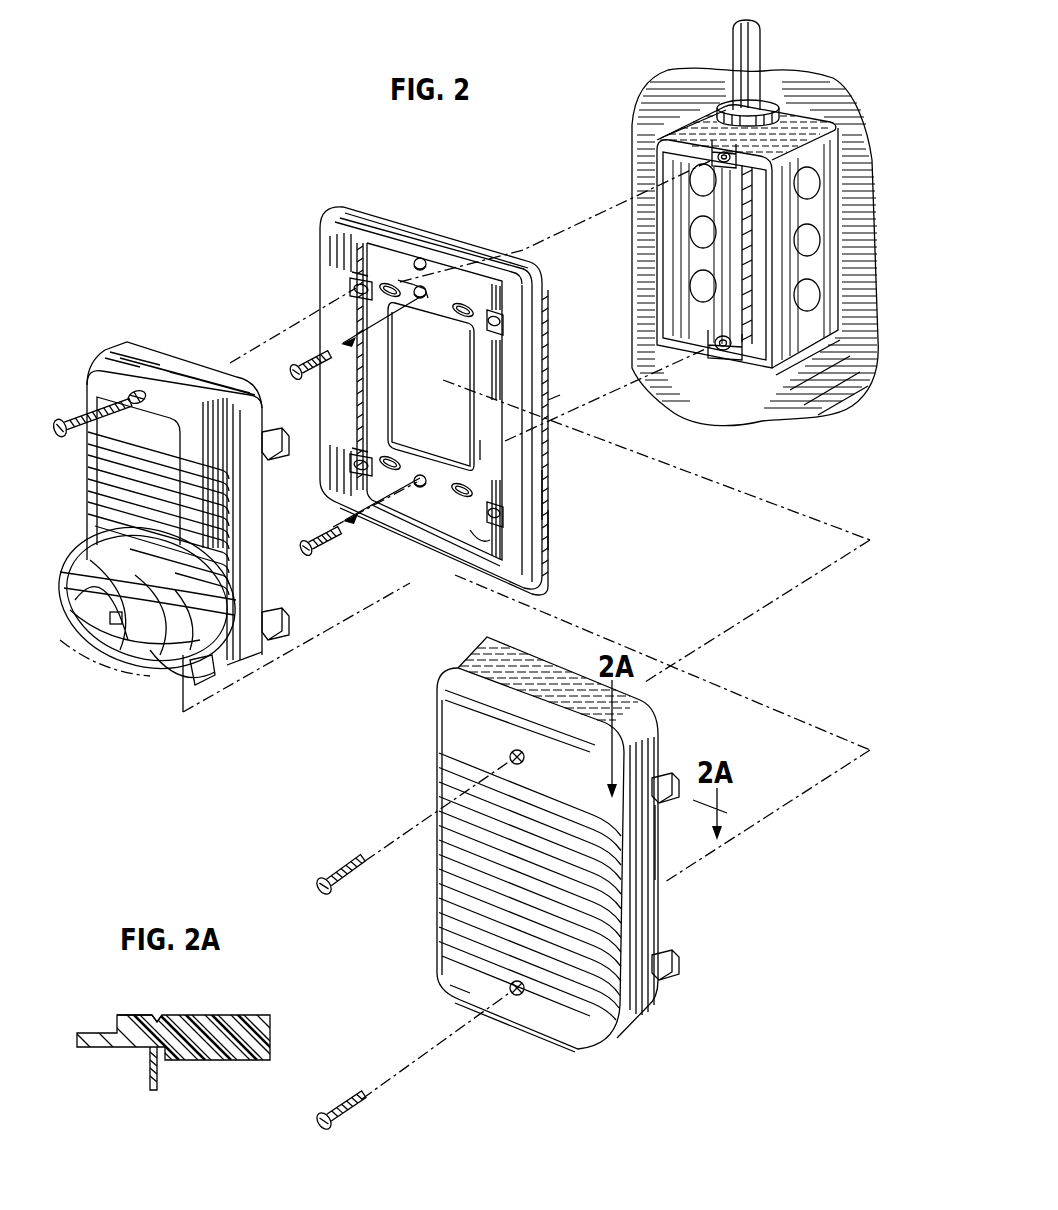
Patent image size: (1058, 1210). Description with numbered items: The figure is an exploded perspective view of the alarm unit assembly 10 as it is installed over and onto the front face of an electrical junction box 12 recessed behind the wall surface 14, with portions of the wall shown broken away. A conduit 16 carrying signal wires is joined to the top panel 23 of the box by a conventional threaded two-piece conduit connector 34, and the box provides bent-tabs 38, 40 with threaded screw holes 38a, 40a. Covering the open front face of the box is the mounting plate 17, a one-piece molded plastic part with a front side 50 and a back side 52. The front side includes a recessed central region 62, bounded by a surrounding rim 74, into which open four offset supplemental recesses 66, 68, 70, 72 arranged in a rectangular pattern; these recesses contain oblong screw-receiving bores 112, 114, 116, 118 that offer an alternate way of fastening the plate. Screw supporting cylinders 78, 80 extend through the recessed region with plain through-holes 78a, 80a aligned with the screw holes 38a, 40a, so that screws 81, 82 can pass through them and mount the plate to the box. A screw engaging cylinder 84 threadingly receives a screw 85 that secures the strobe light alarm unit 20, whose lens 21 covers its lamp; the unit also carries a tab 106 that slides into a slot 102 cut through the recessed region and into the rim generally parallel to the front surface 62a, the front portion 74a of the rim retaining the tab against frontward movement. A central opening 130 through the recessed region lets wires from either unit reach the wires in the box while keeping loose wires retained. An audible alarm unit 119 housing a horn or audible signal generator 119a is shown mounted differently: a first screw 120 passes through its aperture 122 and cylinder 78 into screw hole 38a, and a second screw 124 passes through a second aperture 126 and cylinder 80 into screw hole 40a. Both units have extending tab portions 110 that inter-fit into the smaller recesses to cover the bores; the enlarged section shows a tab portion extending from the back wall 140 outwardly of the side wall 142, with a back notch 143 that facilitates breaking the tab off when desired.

In FIG. 2, the alarm unit assembly 10 is at (520, 178).
In FIG. 2, the electrical junction box 12 is at (812, 118).
In FIG. 2, the wall surface 14 is at (646, 190).
In FIG. 2, the conduit 16 is at (757, 62).
In FIG. 2, the mounting plate 17 is at (549, 498).
In FIG. 2, the strobe light alarm unit 20 is at (78, 470).
In FIG. 2, the lens 21 is at (117, 662).
In FIG. 2, the top panel 23 is at (693, 140).
In FIG. 2, the conduit connector 34 is at (785, 112).
In FIG. 2, the bent-tab 38 is at (705, 168).
In FIG. 2, the screw hole 38a is at (706, 155).
In FIG. 2, the bent-tab 40 is at (745, 345).
In FIG. 2, the screw hole 40a is at (714, 352).
In FIG. 2, the front side 50 is at (545, 482).
In FIG. 2, the back side 52 is at (548, 530).
In FIG. 2, the recessed central region 62 is at (452, 305).
In FIG. 2, the front surface 62a is at (462, 520).
In FIG. 2, the supplemental recess 66 is at (350, 285).
In FIG. 2, the supplemental recess 68 is at (358, 470).
In FIG. 2, the supplemental recess 70 is at (500, 332).
In FIG. 2, the supplemental recess 72 is at (535, 588).
In FIG. 2, the rim 74 is at (453, 250).
In FIG. 2, the front portion of rim 74a is at (388, 500).
In FIG. 2, the screw supporting cylinder 78 is at (405, 280).
In FIG. 2, the through-hole 78a is at (397, 285).
In FIG. 2, the screw supporting cylinder 80 is at (418, 500).
In FIG. 2, the through-hole 80a is at (417, 487).
In FIG. 2, the screw 81 is at (305, 368).
In FIG. 2, the screw 82 is at (313, 550).
In FIG. 2, the screw engaging cylinder 84 is at (420, 262).
In FIG. 2, the screw 85 is at (80, 425).
In FIG. 2, the slot 102 is at (495, 540).
In FIG. 2, the tab 106 is at (215, 680).
In FIG. 2, the tab portion 110 is at (282, 458).
In FIG. 2A, the tab portion 110 is at (272, 1040).
In FIG. 2, the oblong screw-receiving bore 112 is at (350, 283).
In FIG. 2, the oblong screw-receiving bore 114 is at (358, 420).
In FIG. 2, the oblong screw-receiving bore 116 is at (494, 318).
In FIG. 2, the oblong screw-receiving bore 118 is at (500, 515).
In FIG. 2, the audible alarm unit 119 is at (482, 964).
In FIG. 2, the audible signal generator 119a is at (485, 885).
In FIG. 2, the first screw 120 is at (352, 860).
In FIG. 2, the aperture 122 is at (510, 757).
In FIG. 2, the second screw 124 is at (338, 1108).
In FIG. 2, the second aperture 126 is at (520, 998).
In FIG. 2, the central opening 130 is at (460, 405).
In FIG. 2A, the back wall 140 is at (132, 1015).
In FIG. 2, the side wall 142 is at (652, 862).
In FIG. 2A, the side wall 142 is at (160, 1082).
In FIG. 2A, the back notch 143 is at (160, 1014).